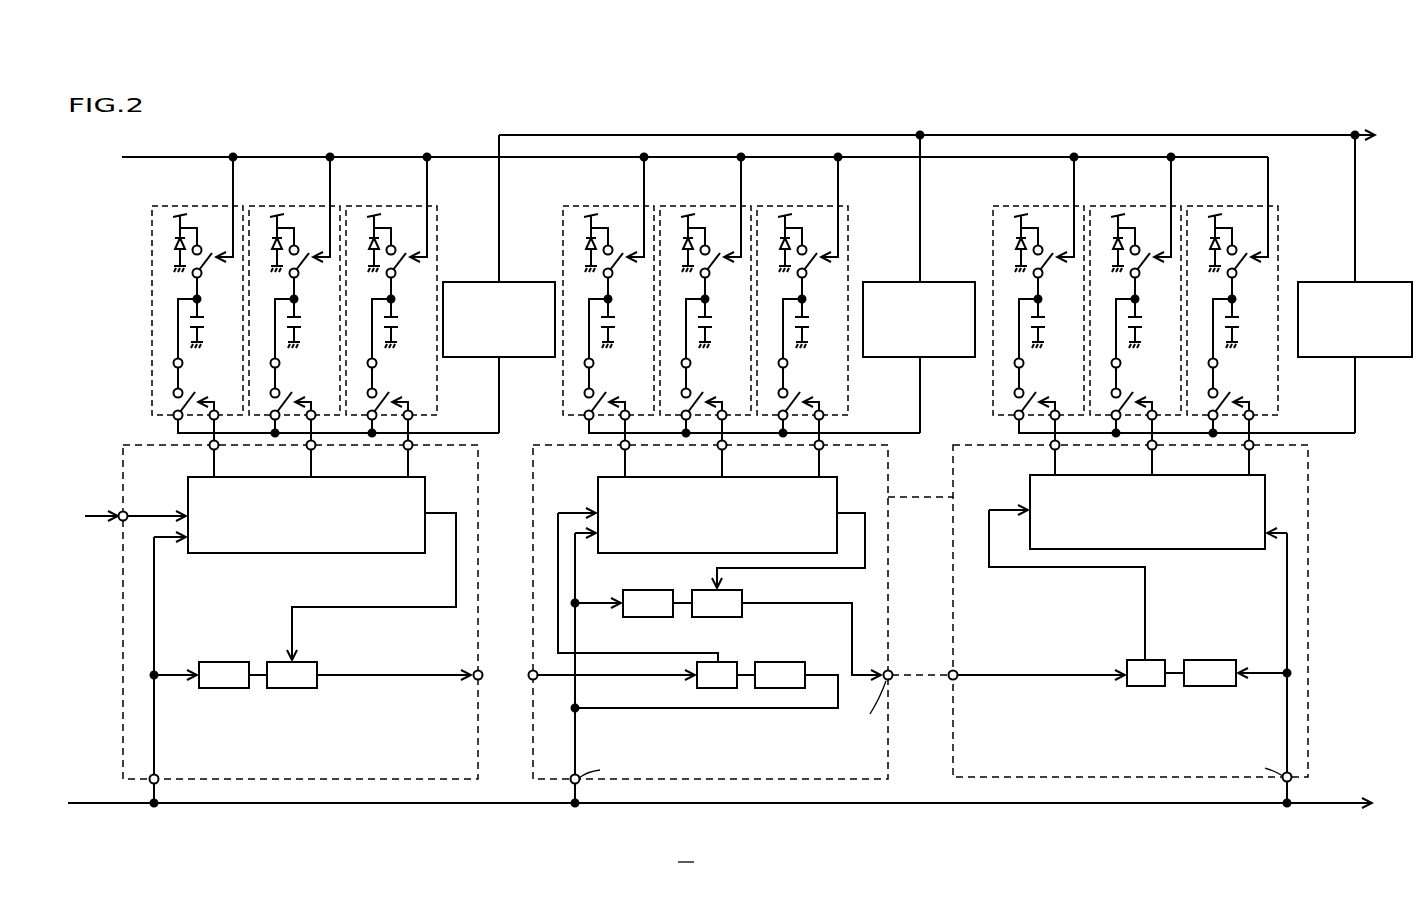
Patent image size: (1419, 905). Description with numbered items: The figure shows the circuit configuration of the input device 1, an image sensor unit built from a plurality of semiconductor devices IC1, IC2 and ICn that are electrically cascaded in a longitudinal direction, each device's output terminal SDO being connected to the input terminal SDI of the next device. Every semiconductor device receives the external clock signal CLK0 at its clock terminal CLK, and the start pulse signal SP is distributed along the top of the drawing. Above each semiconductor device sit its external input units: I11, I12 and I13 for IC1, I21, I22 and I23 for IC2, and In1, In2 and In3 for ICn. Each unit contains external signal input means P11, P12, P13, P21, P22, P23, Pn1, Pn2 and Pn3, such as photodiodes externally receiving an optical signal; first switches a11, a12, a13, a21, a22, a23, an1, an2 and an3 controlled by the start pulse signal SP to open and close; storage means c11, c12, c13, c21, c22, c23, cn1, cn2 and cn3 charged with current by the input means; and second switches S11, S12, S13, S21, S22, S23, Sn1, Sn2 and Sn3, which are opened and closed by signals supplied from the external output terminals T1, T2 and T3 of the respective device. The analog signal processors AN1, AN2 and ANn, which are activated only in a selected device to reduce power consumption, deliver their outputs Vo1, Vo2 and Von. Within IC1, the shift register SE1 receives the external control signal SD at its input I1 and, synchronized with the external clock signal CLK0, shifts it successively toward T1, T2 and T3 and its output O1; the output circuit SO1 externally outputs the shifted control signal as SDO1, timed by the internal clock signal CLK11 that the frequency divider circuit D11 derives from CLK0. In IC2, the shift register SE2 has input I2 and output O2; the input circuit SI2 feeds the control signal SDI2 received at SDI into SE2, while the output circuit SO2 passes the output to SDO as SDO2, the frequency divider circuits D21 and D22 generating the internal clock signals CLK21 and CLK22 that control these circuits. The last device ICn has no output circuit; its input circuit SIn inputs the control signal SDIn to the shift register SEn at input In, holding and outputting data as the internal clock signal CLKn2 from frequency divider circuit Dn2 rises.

The input device 1 is at (686, 850).
The start pulse signal SP is at (679, 158).
The external clock signal CLK0 is at (719, 816).
The semiconductor device IC1 is at (131, 443).
The semiconductor device IC2 is at (541, 443).
The semiconductor device ICn is at (961, 443).
The external input unit I11 is at (198, 287).
The external input unit I12 is at (295, 287).
The external input unit I13 is at (392, 287).
The external input unit I21 is at (609, 287).
The external input unit I22 is at (706, 287).
The external input unit I23 is at (803, 287).
The external input unit In1 is at (1039, 287).
The external input unit In2 is at (1136, 287).
The external input unit In3 is at (1233, 288).
The external signal input means P11 is at (176, 257).
The external signal input means P12 is at (273, 257).
The external signal input means P13 is at (370, 257).
The external signal input means P21 is at (587, 257).
The external signal input means P22 is at (684, 257).
The external signal input means P23 is at (781, 257).
The external signal input means Pn1 is at (1017, 257).
The external signal input means Pn2 is at (1114, 257).
The external signal input means Pn3 is at (1211, 257).
The first switch a11 is at (219, 228).
The first switch a12 is at (316, 228).
The first switch a13 is at (413, 228).
The first switch a21 is at (630, 228).
The first switch a22 is at (727, 228).
The first switch a23 is at (824, 228).
The first switch an1 is at (1060, 228).
The first switch an2 is at (1157, 228).
The first switch an3 is at (1254, 230).
The storage means c11 is at (215, 323).
The storage means c12 is at (312, 323).
The storage means c13 is at (409, 323).
The storage means c21 is at (626, 323).
The storage means c22 is at (723, 323).
The storage means c23 is at (820, 323).
The storage means cn1 is at (1056, 323).
The storage means cn2 is at (1153, 323).
The storage means cn3 is at (1250, 323).
The second switch S11 is at (204, 359).
The second switch S12 is at (301, 359).
The second switch S13 is at (398, 359).
The second switch S21 is at (615, 359).
The second switch S22 is at (712, 359).
The second switch S23 is at (809, 359).
The second switch Sn1 is at (1045, 359).
The second switch Sn2 is at (1142, 359).
The second switch Sn3 is at (1239, 359).
The external output terminal T1 is at (199, 449).
The external output terminal T2 is at (296, 449).
The external output terminal T3 is at (393, 449).
The analog signal processor AN1 is at (499, 246).
The analog signal processor AN2 is at (919, 246).
The analog signal processor ANn is at (1355, 246).
The analog output Vo1 is at (496, 431).
The analog output Vo2 is at (917, 431).
The analog output Von is at (1352, 431).
The shift register SE1 is at (306, 515).
The shift register SE2 is at (717, 515).
The shift register SEn is at (1147, 512).
The external control signal SD is at (92, 528).
The input terminal SDI is at (120, 512).
The output terminal SDO is at (476, 681).
The selection circuit input I1 is at (157, 499).
The selection circuit output O1 is at (378, 569).
The selection circuit input I2 is at (638, 571).
The selection circuit output O2 is at (794, 533).
The selection circuit input In is at (1067, 569).
The clock terminal CLK is at (158, 778).
The frequency divider circuit D11 is at (201, 675).
The output circuit SO1 is at (292, 675).
The internal clock signal CLK11 is at (259, 690).
The external output signal SDO1 is at (394, 686).
The frequency divider circuit D21 is at (624, 603).
The output circuit SO2 is at (717, 603).
The internal clock signal CLK21 is at (684, 606).
The internal clock signal CLK22 is at (746, 672).
The serial data output SDO2 is at (811, 639).
The input circuit SI2 is at (717, 675).
The frequency divider circuit D22 is at (706, 685).
The serial data input SDI2 is at (593, 685).
The input circuit SIn is at (1146, 673).
The frequency divider circuit Dn2 is at (1235, 673).
The internal clock signal CLKn2 is at (1175, 688).
The serial data input SDIn is at (937, 648).